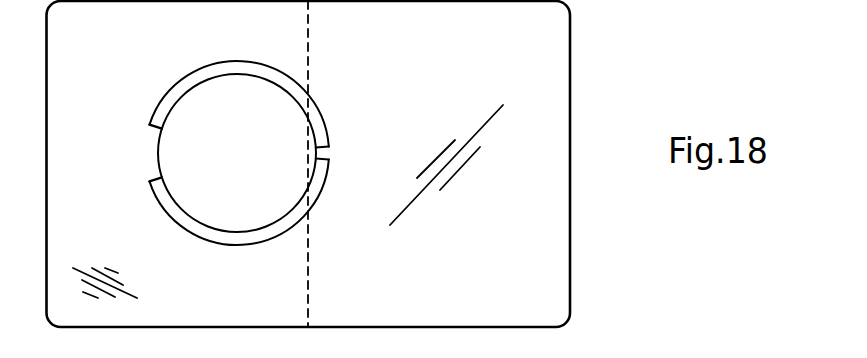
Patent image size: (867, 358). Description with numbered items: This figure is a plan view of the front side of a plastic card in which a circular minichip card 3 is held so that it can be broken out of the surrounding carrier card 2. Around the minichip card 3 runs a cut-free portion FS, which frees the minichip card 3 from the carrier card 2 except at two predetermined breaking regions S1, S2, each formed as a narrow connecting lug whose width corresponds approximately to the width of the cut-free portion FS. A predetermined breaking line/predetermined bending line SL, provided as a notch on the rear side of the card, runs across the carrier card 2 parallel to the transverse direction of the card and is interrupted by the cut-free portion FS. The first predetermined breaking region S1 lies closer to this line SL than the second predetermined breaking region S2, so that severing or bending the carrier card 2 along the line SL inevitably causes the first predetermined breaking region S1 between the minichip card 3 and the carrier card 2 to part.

The carrier card 2 is at (499, 287).
The minichip card 3 is at (254, 164).
The cut-free portion FS is at (188, 82).
The predetermined breaking line/predetermined bending line SL is at (308, 32).
The first predetermined breaking region S1 is at (329, 152).
The second predetermined breaking region S2 is at (153, 155).